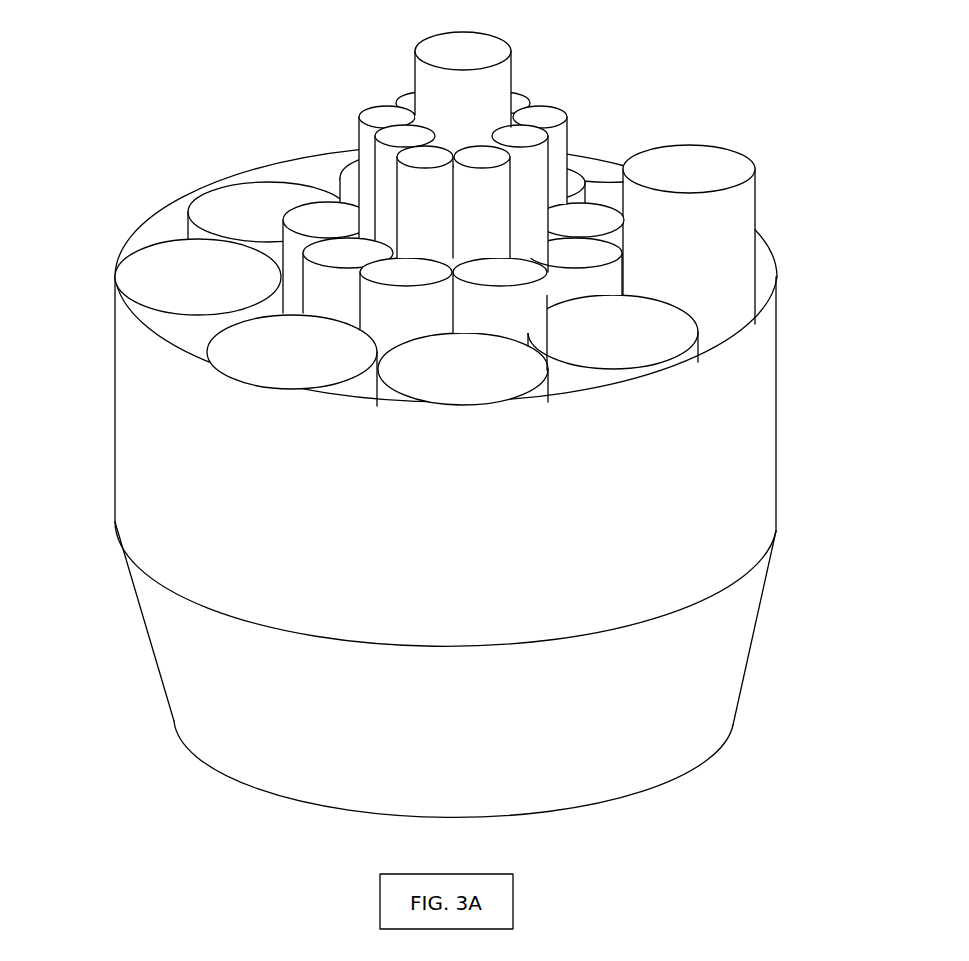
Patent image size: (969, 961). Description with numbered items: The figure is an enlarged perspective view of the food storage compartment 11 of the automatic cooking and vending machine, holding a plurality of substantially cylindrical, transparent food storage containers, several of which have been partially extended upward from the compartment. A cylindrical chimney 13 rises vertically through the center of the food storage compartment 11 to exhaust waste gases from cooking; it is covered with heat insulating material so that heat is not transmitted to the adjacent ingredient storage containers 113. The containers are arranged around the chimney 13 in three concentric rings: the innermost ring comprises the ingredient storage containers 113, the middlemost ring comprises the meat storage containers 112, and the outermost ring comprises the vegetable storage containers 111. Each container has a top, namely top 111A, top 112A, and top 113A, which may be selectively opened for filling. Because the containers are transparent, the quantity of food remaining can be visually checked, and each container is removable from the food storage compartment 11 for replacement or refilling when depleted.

The food storage compartment 11 is at (735, 427).
The vegetable storage containers 111 is at (717, 222).
The top of vegetable storage container 111A is at (133, 277).
The meat storage containers 112 is at (297, 250).
The top of meat storage container 112A is at (318, 222).
The ingredient storage containers 113 is at (557, 145).
The top of ingredient storage container 113A is at (548, 118).
The chimney 13 is at (473, 88).